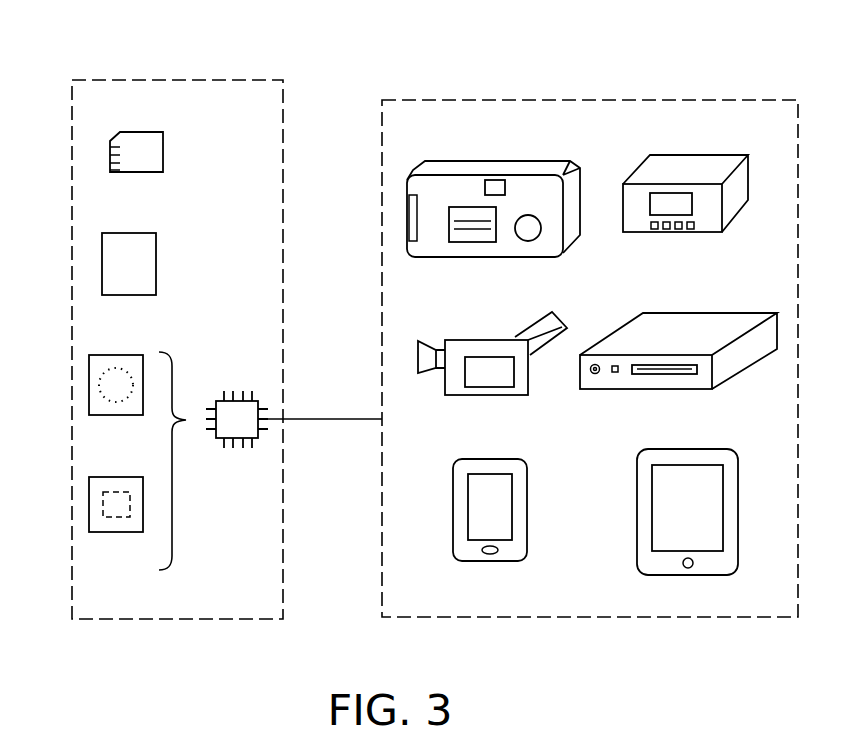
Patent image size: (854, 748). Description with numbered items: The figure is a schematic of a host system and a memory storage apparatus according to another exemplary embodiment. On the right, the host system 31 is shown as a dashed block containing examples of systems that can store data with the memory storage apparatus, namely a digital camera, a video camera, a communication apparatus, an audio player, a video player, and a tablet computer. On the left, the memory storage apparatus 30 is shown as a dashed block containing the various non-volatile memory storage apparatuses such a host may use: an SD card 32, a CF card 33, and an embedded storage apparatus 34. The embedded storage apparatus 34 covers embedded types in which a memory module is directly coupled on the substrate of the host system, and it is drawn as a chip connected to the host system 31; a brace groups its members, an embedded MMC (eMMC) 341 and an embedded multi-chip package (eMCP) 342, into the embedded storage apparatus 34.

The memory storage apparatus 30 is at (170, 79).
The host system 31 is at (524, 99).
The SD card 32 is at (110, 158).
The CF card 33 is at (102, 266).
The embedded storage apparatus 34 is at (237, 392).
The embedded MMC (eMMC) 341 is at (89, 388).
The embedded multi-chip package (eMCP) 342 is at (89, 506).